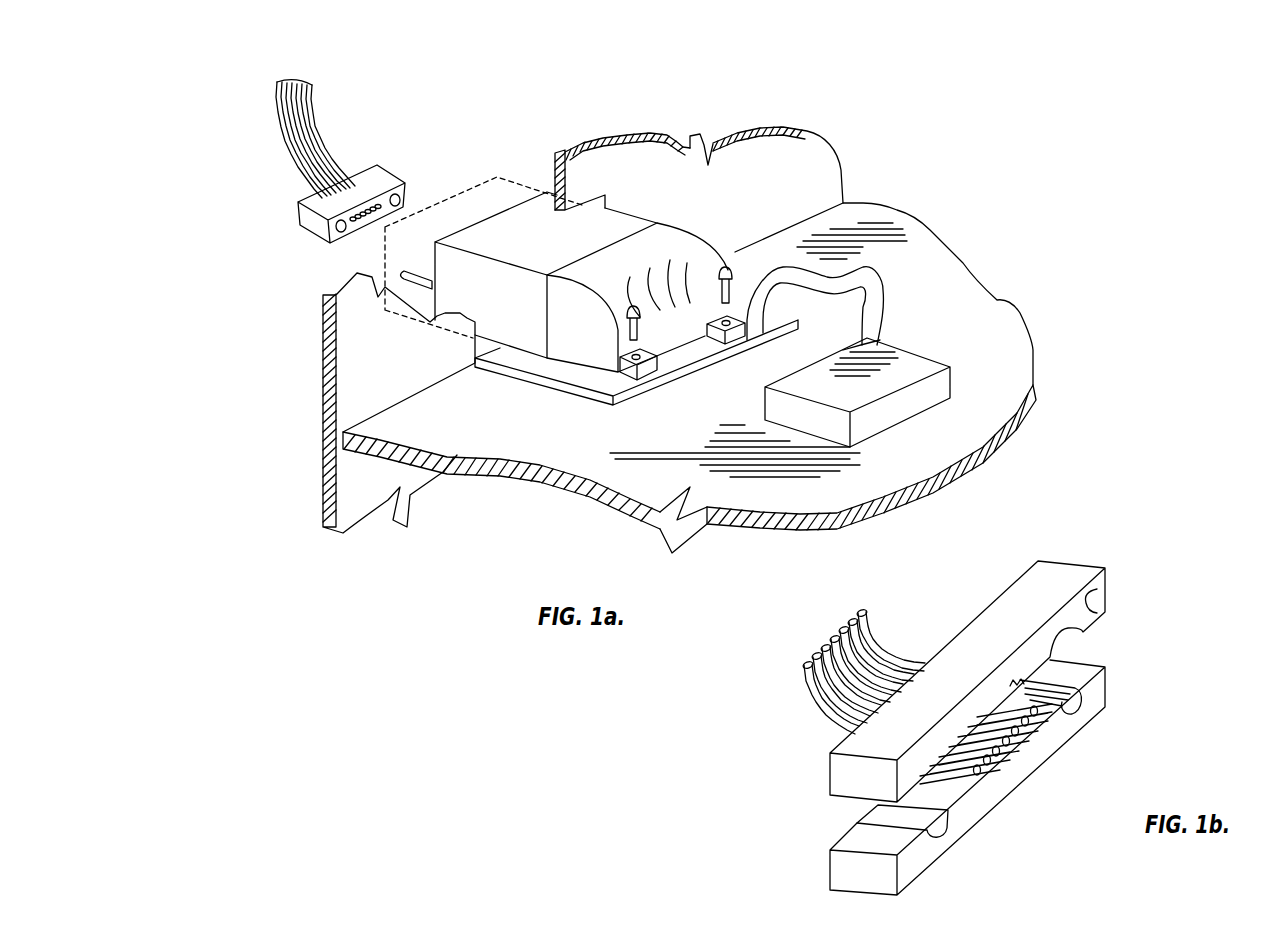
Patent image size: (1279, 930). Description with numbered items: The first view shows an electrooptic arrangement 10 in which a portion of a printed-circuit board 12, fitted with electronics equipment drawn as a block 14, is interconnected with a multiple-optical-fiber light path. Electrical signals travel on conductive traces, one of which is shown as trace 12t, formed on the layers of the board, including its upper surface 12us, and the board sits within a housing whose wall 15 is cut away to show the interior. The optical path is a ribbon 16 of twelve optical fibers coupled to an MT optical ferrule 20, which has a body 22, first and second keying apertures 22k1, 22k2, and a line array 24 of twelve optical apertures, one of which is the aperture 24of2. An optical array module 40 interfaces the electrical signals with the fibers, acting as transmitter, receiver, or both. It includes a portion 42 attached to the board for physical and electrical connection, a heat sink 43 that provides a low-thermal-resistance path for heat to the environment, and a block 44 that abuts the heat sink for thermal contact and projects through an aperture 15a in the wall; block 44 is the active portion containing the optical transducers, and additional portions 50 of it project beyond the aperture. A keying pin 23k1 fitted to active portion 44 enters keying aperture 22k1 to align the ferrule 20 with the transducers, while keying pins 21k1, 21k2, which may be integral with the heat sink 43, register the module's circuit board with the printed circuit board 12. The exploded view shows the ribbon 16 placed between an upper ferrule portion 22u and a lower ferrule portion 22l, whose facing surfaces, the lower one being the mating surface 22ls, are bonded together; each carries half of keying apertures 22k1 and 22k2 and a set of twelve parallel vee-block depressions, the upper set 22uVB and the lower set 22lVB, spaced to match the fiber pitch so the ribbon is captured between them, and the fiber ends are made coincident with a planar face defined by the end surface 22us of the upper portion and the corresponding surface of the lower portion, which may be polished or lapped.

In FIG. 1A, the electrooptic arrangement 10 is at (464, 615).
In FIG. 1A, the printed-circuit board 12 is at (637, 505).
In FIG. 1A, the electrically conductive trace 12t is at (866, 274).
In FIG. 1A, the upper surface of base panel 12us is at (987, 293).
In FIG. 1A, the electronics equipment 14 is at (917, 360).
In FIG. 1A, the housing wall 15 is at (810, 165).
In FIG. 1A, the aperture in housing wall 15a is at (606, 194).
In FIG. 1A, the optical fiber ribbon 16 is at (313, 148).
In FIG. 1B, the optical fiber ribbon 16 is at (883, 655).
In FIG. 1A, the MT optical ferrule 20 is at (381, 137).
In FIG. 1B, the MT optical ferrule 20 is at (1116, 544).
In FIG. 1A, the keying pin 21k1 is at (640, 330).
In FIG. 1A, the keying pin 21k2 is at (730, 303).
In FIG. 1A, the ferrule body 22 is at (373, 238).
In FIG. 1A, the first keying aperture 22k1 is at (335, 231).
In FIG. 1B, the first keying aperture 22k1 is at (930, 827).
In FIG. 1A, the second keying aperture 22k2 is at (403, 200).
In FIG. 1B, the second keying aperture 22k2 is at (1073, 700).
In FIG. 1A, the keying pin 23k1 is at (419, 283).
In FIG. 1A, the line array of optical apertures 24 is at (422, 229).
In FIG. 1A, the optical aperture 24of2 is at (357, 226).
In FIG. 1A, the optical array module 40 is at (566, 211).
In FIG. 1A, the board-attachment portion 42 is at (636, 352).
In FIG. 1A, the heat sink portion 43 is at (700, 258).
In FIG. 1A, the active portion block 44 is at (583, 226).
In FIG. 1A, the additional portion 50 is at (515, 197).
In FIG. 1B, the upper ferrule portion 22u is at (1035, 650).
In FIG. 1B, the upper set of vee-block depressions 22uVB is at (1010, 691).
In FIG. 1B, the end surface of upper ferrule portion 22us is at (1106, 603).
In FIG. 1B, the lower mating surface 22ls is at (1083, 715).
In FIG. 1B, the lower set of vee-block depressions 22lVB is at (1025, 753).
In FIG. 1B, the lower ferrule portion 22l is at (996, 786).